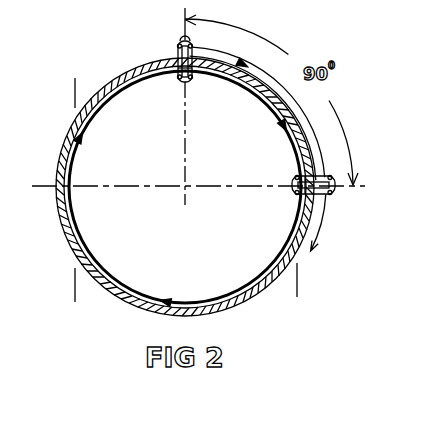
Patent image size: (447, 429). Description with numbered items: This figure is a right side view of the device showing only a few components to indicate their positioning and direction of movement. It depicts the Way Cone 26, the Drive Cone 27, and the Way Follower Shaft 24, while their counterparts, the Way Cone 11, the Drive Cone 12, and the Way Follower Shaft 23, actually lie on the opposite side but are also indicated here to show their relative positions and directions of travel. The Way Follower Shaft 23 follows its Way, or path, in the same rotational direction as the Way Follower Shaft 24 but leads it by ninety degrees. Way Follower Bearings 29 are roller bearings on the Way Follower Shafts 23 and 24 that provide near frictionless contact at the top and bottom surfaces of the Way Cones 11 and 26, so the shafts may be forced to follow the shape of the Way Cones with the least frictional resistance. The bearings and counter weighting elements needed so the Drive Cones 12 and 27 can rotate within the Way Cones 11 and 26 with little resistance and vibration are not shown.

The Way Cone 11 is at (190, 180).
The Drive Cone 12 is at (185, 187).
The Way Follower Shaft 23 is at (291, 191).
The Way Follower Shaft 24 is at (187, 84).
The Way Cone 26 is at (120, 64).
The Drive Cone 27 is at (102, 122).
The Way Follower Bearings 29 is at (171, 31).